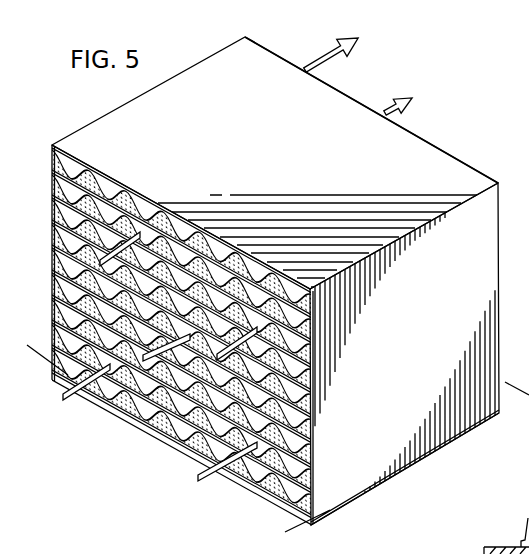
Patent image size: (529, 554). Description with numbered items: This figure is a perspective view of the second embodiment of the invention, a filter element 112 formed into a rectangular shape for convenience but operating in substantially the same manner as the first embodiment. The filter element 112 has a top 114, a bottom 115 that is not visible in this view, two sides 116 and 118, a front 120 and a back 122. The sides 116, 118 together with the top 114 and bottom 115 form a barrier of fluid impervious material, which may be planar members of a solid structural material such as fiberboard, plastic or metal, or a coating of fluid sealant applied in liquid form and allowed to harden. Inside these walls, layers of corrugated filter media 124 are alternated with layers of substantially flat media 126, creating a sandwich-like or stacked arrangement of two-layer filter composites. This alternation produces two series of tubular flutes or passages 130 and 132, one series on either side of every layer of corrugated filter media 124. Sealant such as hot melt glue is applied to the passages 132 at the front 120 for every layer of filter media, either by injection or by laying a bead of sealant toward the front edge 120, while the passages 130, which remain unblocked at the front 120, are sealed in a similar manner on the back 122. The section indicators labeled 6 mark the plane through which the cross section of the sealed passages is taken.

The filter element 112 is at (201, 57).
The top 114 is at (281, 160).
The bottom 115 is at (398, 476).
The side 116 is at (398, 363).
The side 118 is at (70, 135).
The front 120 is at (105, 385).
The back 122 is at (447, 154).
The corrugated filter media 124 is at (128, 408).
The flat media 126 is at (167, 437).
The passages 130 is at (263, 485).
The passages 132 is at (243, 476).
The section line 6- 6 is at (40, 348).